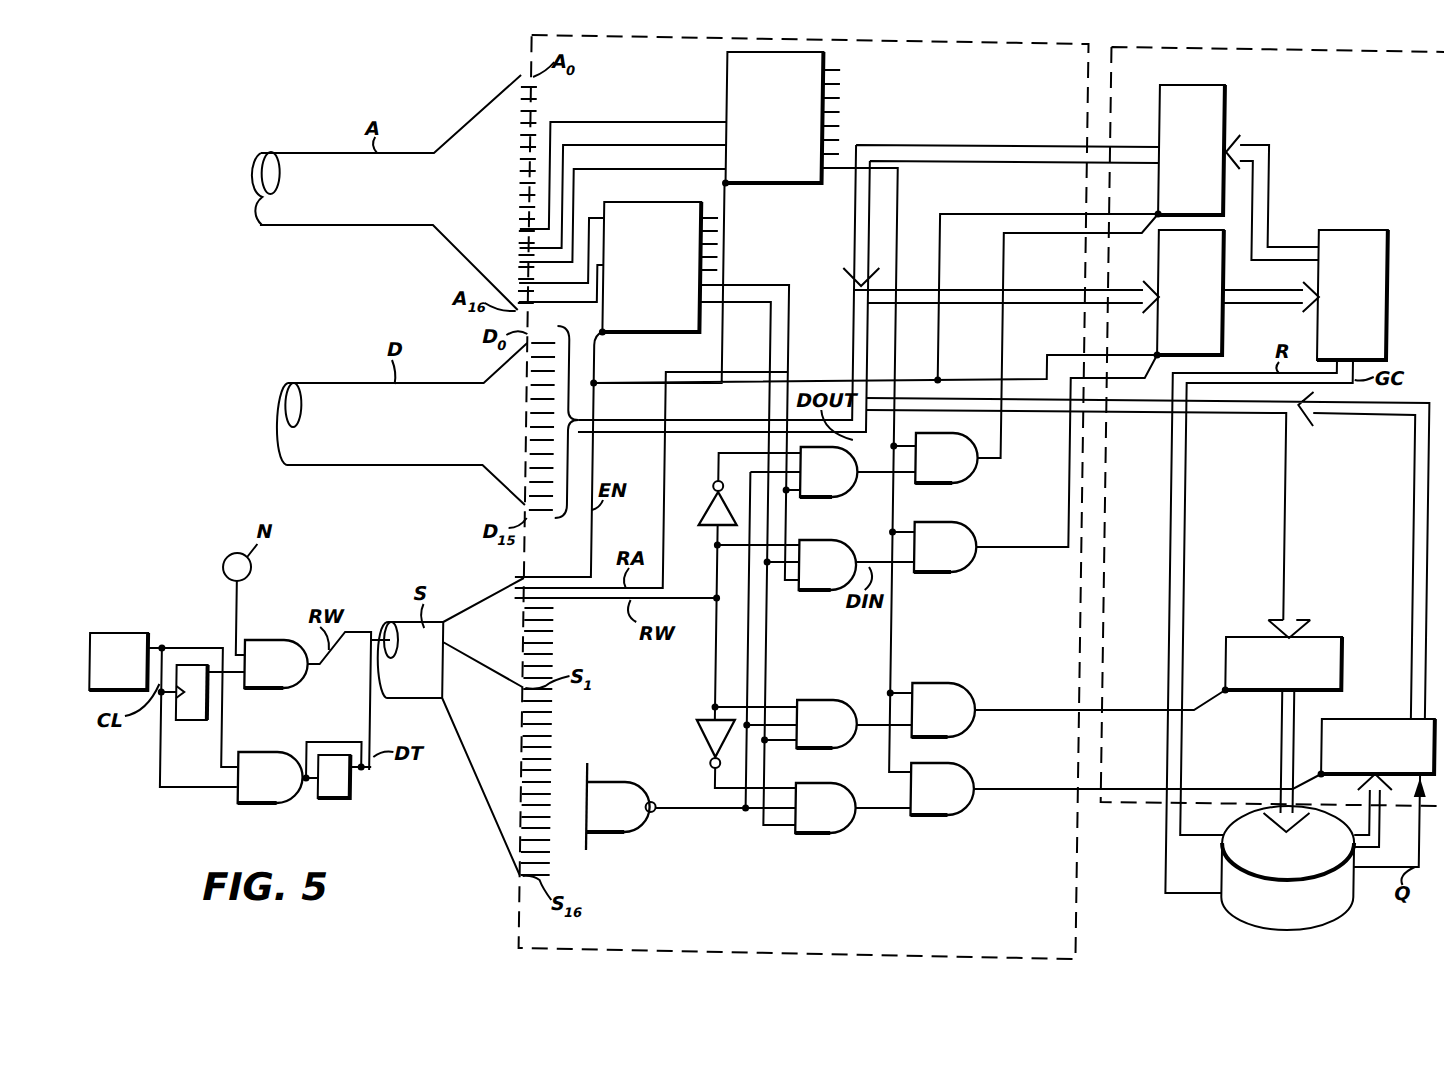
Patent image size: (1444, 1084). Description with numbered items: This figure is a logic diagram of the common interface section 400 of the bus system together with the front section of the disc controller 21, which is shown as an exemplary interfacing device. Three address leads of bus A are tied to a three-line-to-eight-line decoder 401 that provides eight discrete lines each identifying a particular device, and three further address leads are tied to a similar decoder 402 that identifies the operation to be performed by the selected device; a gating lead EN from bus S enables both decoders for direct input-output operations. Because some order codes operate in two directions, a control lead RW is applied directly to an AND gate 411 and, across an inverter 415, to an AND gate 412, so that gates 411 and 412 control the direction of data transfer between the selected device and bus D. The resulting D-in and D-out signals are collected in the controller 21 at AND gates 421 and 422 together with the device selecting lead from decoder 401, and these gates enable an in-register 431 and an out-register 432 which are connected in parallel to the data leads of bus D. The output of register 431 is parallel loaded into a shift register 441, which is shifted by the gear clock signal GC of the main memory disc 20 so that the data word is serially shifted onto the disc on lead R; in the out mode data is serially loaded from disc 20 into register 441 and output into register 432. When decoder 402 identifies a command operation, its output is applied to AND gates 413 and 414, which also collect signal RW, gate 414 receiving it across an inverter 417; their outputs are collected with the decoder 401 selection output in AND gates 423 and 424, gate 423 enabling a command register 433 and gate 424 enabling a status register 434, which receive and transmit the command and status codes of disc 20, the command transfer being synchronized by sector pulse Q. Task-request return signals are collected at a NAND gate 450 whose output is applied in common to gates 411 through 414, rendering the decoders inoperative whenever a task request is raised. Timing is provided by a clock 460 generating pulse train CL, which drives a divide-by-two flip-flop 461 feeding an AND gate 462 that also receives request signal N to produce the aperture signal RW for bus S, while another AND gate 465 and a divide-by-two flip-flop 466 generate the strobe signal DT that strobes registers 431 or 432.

The main memory disc 20 is at (1333, 912).
The controller 21 is at (1110, 802).
The common interface section 400 is at (520, 900).
The 3-line-to-8-line decoder 401 is at (722, 85).
The decoder 402 is at (650, 330).
The AND gate 411 is at (810, 540).
The AND gate 412 is at (836, 497).
The AND gate 413 is at (836, 700).
The AND gate 414 is at (840, 783).
The inverter 415 is at (705, 507).
The inverter 417 is at (702, 733).
The AND gate 421 is at (965, 572).
The AND gate 422 is at (960, 483).
The AND gate 423 is at (967, 683).
The AND gate 424 is at (985, 758).
The in-register 431 is at (1222, 323).
The out-register 432 is at (1225, 95).
The command register 433 is at (1343, 636).
The status register 434 is at (1377, 719).
The shift register 441 is at (1372, 230).
The NAND gate 450 is at (627, 833).
The clock 460 is at (137, 632).
The flip-flop 461 is at (196, 722).
The AND gate 462 is at (268, 690).
The AND gate 465 is at (258, 805).
The flip-flop 466 is at (351, 800).